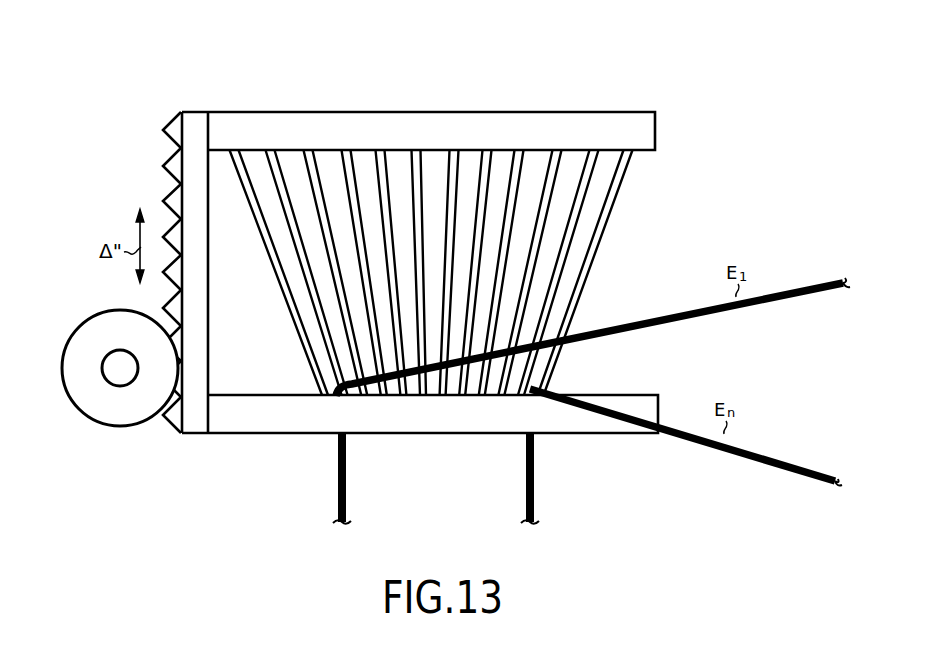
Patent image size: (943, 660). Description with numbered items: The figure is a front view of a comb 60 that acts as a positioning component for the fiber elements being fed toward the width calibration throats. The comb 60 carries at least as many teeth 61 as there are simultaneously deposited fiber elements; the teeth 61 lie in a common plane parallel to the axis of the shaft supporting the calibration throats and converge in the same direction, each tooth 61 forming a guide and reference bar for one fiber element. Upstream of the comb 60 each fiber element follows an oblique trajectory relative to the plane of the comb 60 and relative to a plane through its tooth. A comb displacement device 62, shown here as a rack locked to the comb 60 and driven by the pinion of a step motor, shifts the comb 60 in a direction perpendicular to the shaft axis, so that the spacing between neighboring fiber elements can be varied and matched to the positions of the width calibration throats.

The comb 60 is at (295, 111).
The teeth 61 is at (288, 277).
The comb displacement device 62 is at (107, 432).